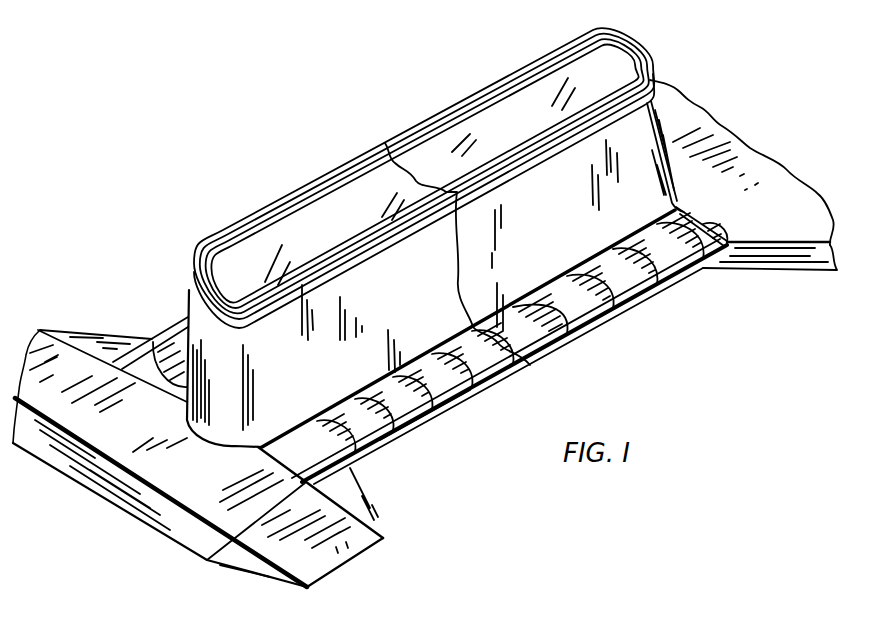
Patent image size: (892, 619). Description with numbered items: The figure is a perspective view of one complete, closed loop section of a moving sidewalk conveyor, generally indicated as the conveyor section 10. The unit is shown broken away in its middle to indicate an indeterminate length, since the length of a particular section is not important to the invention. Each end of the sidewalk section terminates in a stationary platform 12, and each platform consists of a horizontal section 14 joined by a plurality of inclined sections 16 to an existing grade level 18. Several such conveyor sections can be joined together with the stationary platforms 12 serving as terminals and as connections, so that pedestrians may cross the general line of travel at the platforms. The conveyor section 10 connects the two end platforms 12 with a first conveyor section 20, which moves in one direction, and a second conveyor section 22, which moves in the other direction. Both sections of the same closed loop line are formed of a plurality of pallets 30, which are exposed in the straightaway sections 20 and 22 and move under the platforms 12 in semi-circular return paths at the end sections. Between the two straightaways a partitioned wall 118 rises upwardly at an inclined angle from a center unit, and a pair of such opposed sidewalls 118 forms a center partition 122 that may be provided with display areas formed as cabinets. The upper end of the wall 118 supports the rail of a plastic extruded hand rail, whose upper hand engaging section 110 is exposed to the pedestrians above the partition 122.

The conveyor section 10 is at (454, 231).
The upper hand engaging section 110 is at (543, 55).
The center partition 122 is at (336, 165).
The partitioned wall 118 is at (650, 117).
The stationary platform 12 is at (172, 548).
The horizontal section 14 is at (115, 437).
The inclined section 16 is at (70, 357).
The existing grade level 18 is at (509, 345).
The first conveyor section 20 is at (556, 296).
The second conveyor section 22 is at (180, 352).
The pallet 30 is at (412, 410).